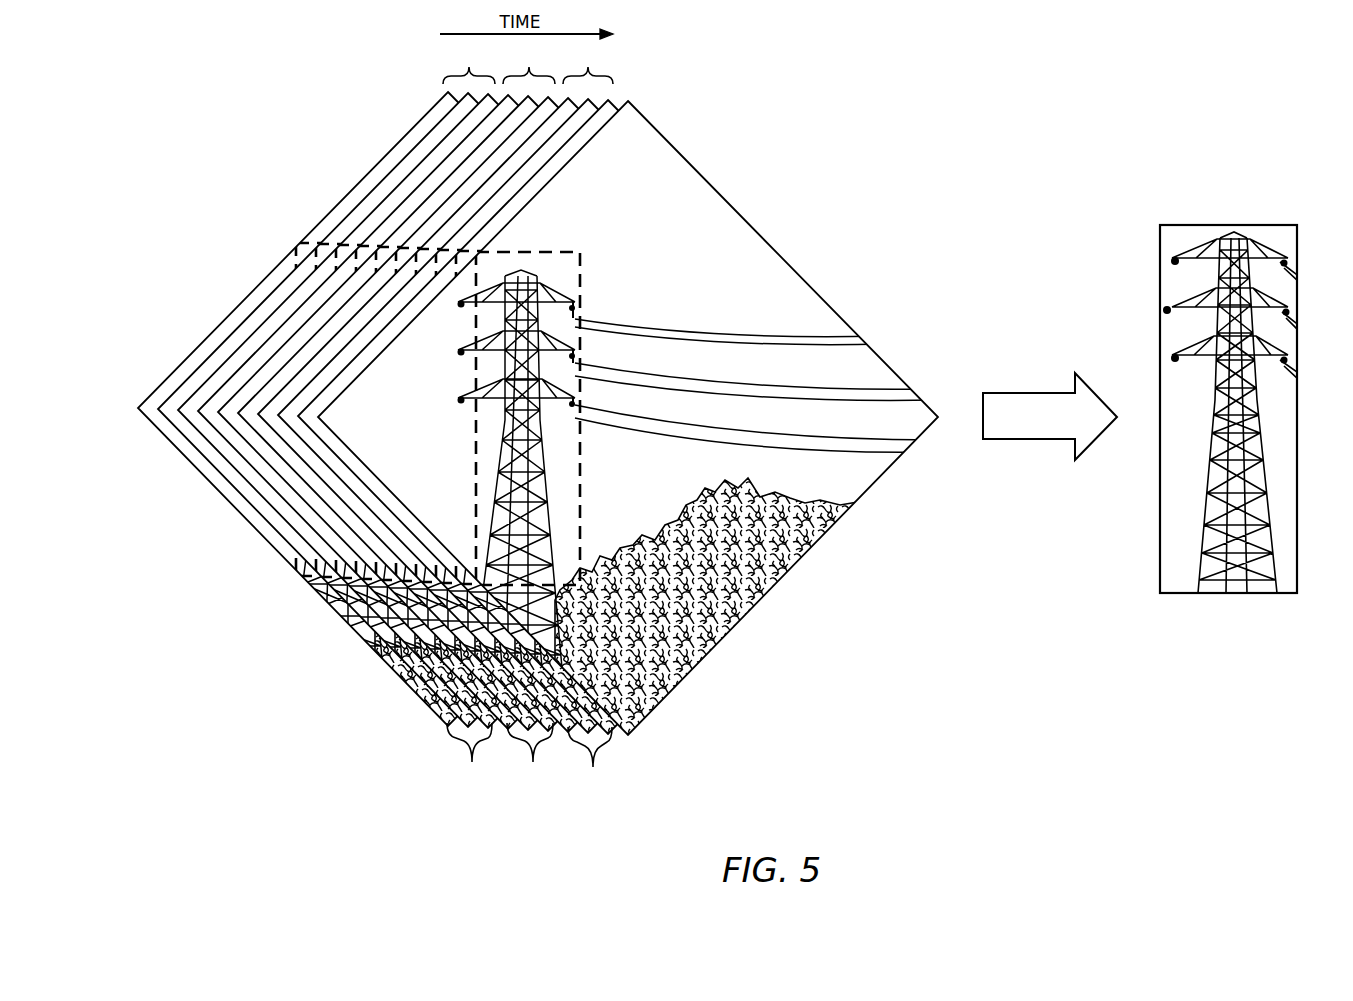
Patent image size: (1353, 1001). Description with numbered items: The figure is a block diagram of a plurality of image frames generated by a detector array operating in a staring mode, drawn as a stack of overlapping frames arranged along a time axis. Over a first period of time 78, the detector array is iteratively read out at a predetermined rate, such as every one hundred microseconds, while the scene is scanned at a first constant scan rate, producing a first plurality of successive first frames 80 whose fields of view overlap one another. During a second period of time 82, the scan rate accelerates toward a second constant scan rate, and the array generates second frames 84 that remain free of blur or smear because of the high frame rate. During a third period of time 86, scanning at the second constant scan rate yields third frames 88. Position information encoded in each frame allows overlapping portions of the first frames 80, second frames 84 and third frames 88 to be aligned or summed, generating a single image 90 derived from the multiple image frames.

The first period of time 78 is at (469, 64).
The second period of time 82 is at (529, 64).
The third period of time 86 is at (588, 64).
The first frames 80 is at (469, 755).
The second frames 84 is at (530, 755).
The third frames 88 is at (590, 759).
The single image 90 is at (1172, 225).